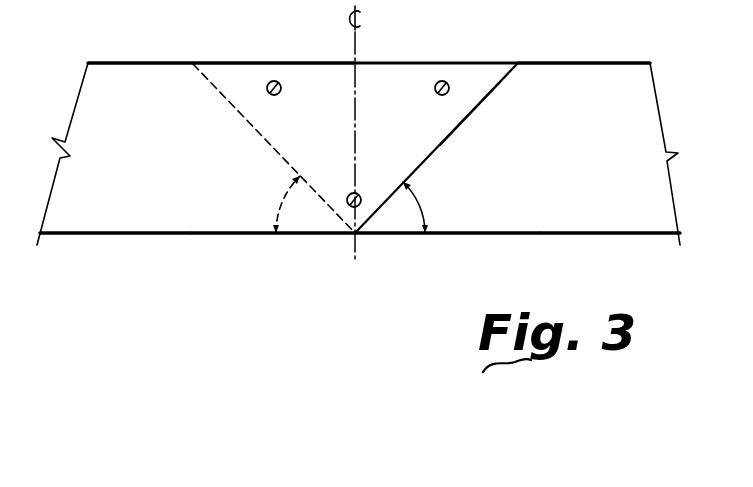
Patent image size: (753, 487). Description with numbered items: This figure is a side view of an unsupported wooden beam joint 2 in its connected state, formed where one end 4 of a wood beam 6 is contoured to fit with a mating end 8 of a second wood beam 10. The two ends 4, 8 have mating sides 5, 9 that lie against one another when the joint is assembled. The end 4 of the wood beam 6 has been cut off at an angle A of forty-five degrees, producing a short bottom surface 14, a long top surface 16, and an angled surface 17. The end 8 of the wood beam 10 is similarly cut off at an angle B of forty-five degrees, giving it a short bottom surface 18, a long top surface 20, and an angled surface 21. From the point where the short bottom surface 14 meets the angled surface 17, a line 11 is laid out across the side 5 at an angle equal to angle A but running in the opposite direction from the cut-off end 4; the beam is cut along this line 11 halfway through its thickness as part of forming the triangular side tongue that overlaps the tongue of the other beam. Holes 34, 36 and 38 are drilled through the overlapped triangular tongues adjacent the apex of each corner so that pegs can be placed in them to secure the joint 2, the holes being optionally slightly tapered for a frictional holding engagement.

The wood beam joint 2 is at (370, 55).
The end of wood beam 4 is at (495, 220).
The mating side 5 is at (578, 158).
The wood beam 6 is at (610, 57).
The mating end of wood beam 8 is at (195, 218).
The mating side 9 is at (175, 175).
The wood beam 10 is at (138, 57).
The line 11 is at (466, 113).
The short bottom surface 14 is at (571, 236).
The long top surface 16 is at (567, 62).
The angled surface 17 is at (227, 103).
The short bottom surface 18 is at (128, 236).
The long top surface 20 is at (224, 62).
The angled surface 21 is at (444, 142).
The hole 34 is at (281, 83).
The hole 36 is at (448, 81).
The hole 38 is at (357, 207).
The angle A is at (279, 204).
The angle B is at (419, 207).